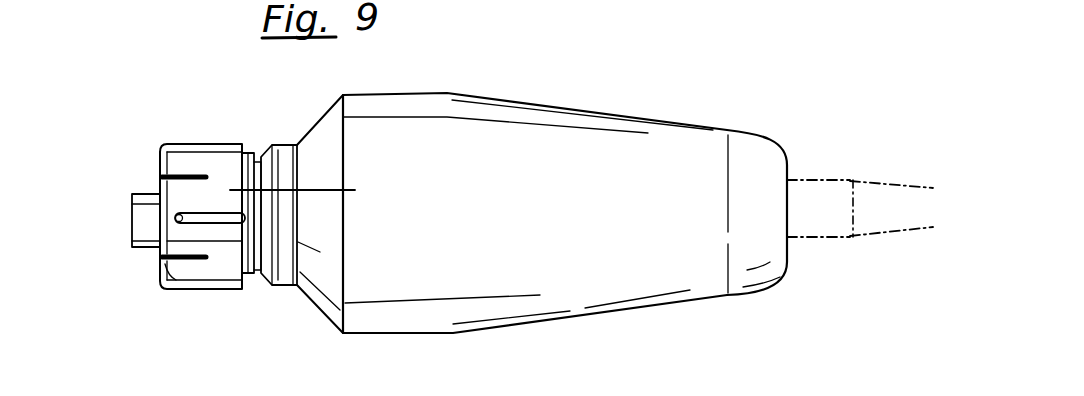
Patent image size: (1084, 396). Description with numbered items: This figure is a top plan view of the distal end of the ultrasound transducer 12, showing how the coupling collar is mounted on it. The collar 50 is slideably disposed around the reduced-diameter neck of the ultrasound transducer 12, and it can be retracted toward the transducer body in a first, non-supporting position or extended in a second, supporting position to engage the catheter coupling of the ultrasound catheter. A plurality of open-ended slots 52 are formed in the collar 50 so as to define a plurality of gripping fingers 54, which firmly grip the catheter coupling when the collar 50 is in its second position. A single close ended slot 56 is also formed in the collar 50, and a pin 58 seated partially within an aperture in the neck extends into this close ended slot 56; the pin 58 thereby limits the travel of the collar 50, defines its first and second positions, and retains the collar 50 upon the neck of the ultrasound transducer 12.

The ultrasound transducer 12 is at (529, 88).
The collar 50 is at (218, 290).
The open-ended slots 52 is at (160, 178).
The gripping fingers 54 is at (198, 144).
The close ended slot 56 is at (366, 184).
The pin 58 is at (173, 218).